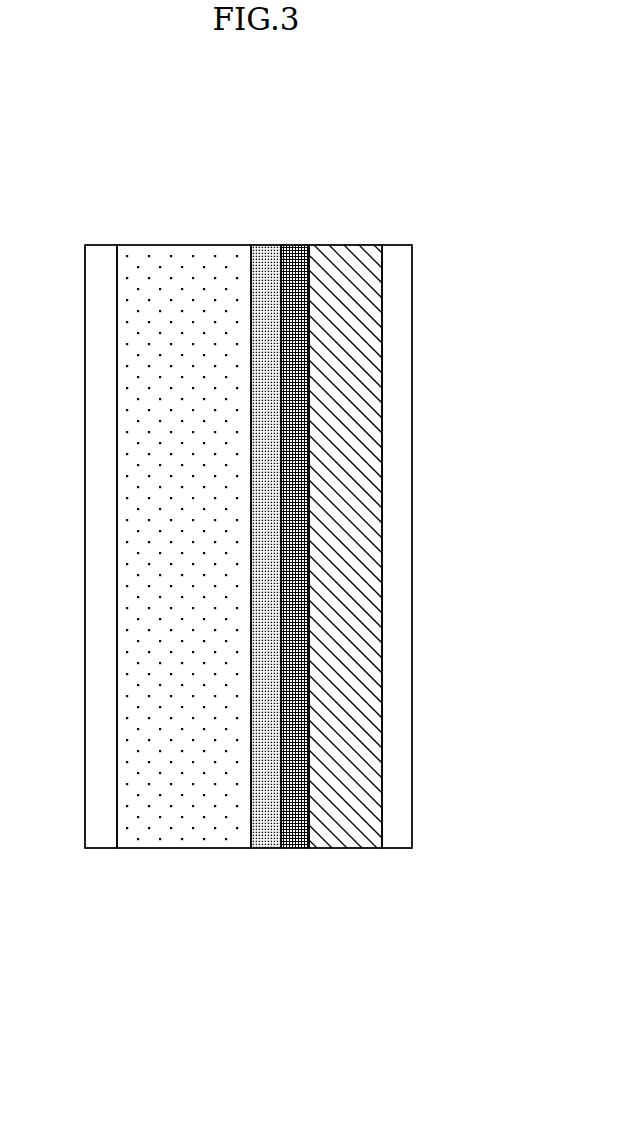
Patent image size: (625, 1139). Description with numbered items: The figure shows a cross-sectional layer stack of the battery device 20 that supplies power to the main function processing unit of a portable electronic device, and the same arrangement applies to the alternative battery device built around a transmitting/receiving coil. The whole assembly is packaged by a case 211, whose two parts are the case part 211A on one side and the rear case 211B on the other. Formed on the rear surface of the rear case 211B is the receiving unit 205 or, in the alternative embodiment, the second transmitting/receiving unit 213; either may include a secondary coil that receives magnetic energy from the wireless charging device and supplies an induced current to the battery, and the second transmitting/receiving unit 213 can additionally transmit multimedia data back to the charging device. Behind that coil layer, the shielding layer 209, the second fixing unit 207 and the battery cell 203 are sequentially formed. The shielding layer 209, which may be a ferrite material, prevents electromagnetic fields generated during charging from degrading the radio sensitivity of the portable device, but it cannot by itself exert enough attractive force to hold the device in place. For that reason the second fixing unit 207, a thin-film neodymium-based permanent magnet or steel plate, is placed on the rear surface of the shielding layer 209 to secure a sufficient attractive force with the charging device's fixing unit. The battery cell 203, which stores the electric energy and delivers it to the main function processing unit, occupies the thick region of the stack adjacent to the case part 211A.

The battery device 20 is at (228, 132).
The battery cell 203 is at (190, 248).
The receiving unit 205 is at (363, 576).
The second fixing unit 207 is at (258, 248).
The shielding layer 209 is at (297, 248).
The case 211 is at (248, 604).
The case part 211A is at (397, 574).
The rear case 211B is at (103, 842).
The second transmitting/receiving unit 213 is at (349, 250).